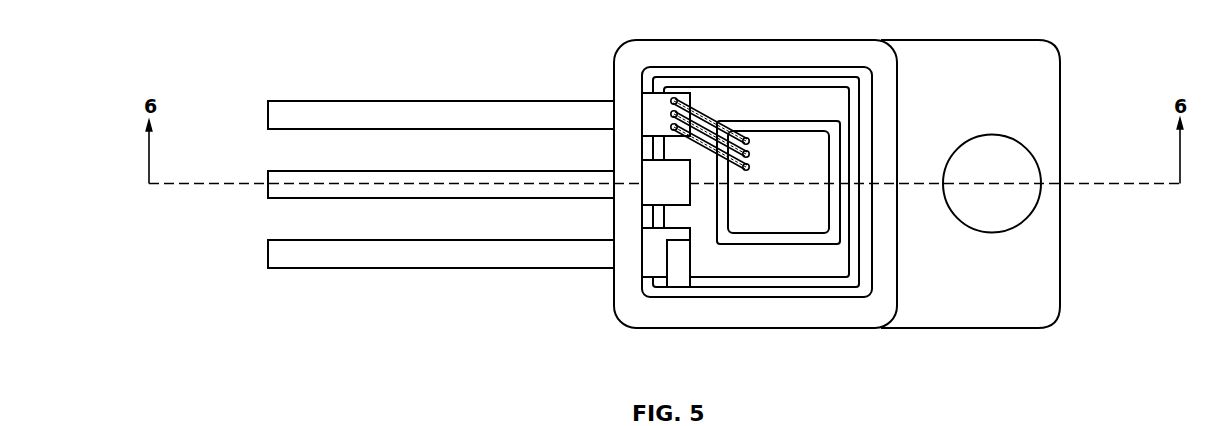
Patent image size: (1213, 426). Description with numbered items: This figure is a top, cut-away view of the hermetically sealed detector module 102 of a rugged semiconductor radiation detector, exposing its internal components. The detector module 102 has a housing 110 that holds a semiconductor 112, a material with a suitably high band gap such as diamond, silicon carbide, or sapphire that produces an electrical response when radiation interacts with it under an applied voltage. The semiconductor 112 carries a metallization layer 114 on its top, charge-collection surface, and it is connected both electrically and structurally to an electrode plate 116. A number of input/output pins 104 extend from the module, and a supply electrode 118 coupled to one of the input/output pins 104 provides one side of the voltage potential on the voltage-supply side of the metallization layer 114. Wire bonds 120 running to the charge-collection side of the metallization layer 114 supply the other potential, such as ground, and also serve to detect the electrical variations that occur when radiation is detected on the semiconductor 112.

The detector module 102 is at (626, 197).
The input/output pins 104 is at (268, 108).
The housing 110 is at (650, 48).
The semiconductor 112 is at (759, 246).
The metallization layer 114 is at (817, 239).
The electrode plate 116 is at (705, 277).
The supply electrode 118 is at (676, 281).
The wire bonds 120 is at (726, 119).